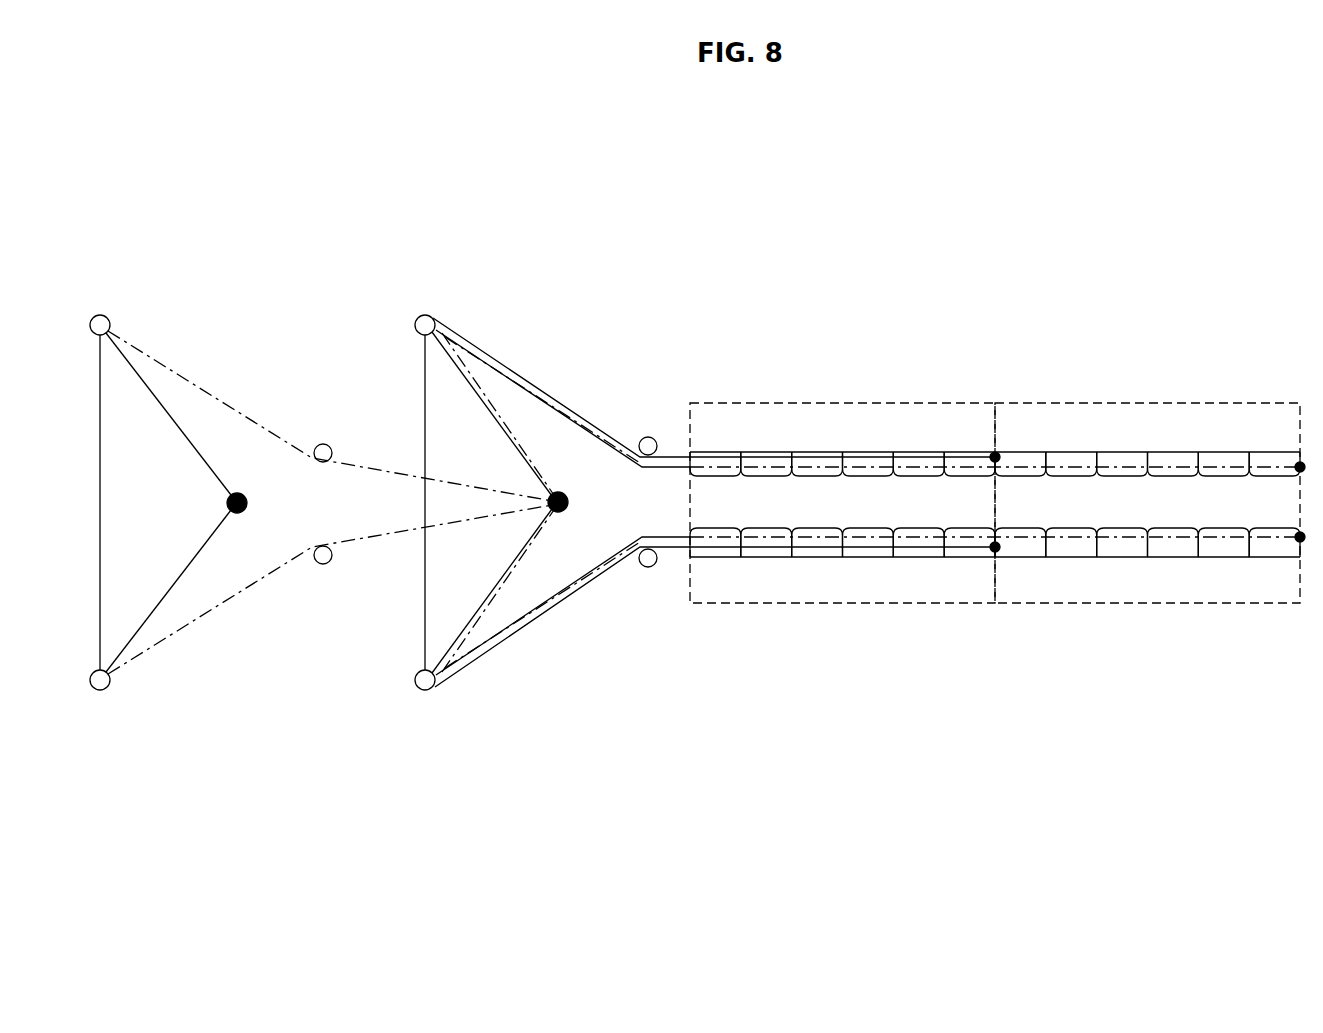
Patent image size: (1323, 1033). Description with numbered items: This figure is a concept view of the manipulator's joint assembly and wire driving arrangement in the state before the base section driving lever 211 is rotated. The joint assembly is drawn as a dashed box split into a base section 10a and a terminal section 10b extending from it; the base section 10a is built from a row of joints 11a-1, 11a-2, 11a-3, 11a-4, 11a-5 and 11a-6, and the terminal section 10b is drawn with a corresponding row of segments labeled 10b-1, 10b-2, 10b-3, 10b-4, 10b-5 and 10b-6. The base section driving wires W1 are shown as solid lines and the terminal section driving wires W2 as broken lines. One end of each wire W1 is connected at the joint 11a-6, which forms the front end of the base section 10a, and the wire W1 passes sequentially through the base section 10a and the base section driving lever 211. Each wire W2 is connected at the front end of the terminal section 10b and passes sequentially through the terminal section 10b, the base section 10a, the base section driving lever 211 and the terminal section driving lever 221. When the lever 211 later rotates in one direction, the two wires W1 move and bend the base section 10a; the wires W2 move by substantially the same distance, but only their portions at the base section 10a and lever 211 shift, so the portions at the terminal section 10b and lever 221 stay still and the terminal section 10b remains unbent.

The terminal section driving lever 221 is at (118, 513).
The base section driving lever 211 is at (436, 408).
The base section driving wire W1 is at (587, 418).
The terminal section driving wire W2 is at (540, 406).
The base section 10a is at (750, 604).
The terminal section 10b is at (1058, 604).
The joint 11a-1 is at (722, 452).
The joint 11a-2 is at (767, 460).
The joint 11a-3 is at (822, 452).
The joint 11a-4 is at (872, 460).
The joint 11a-5 is at (925, 452).
The joint 11a-6 is at (975, 460).
The first cell of second body portion 10b-1 is at (1025, 452).
The second cell of second body portion 10b-2 is at (1073, 460).
The third cell of second body portion 10b-3 is at (1127, 452).
The fourth cell of second body portion 10b-4 is at (1177, 460).
The fifth cell of second body portion 10b-5 is at (1228, 452).
The sixth cell of second body portion 10b-6 is at (1278, 460).